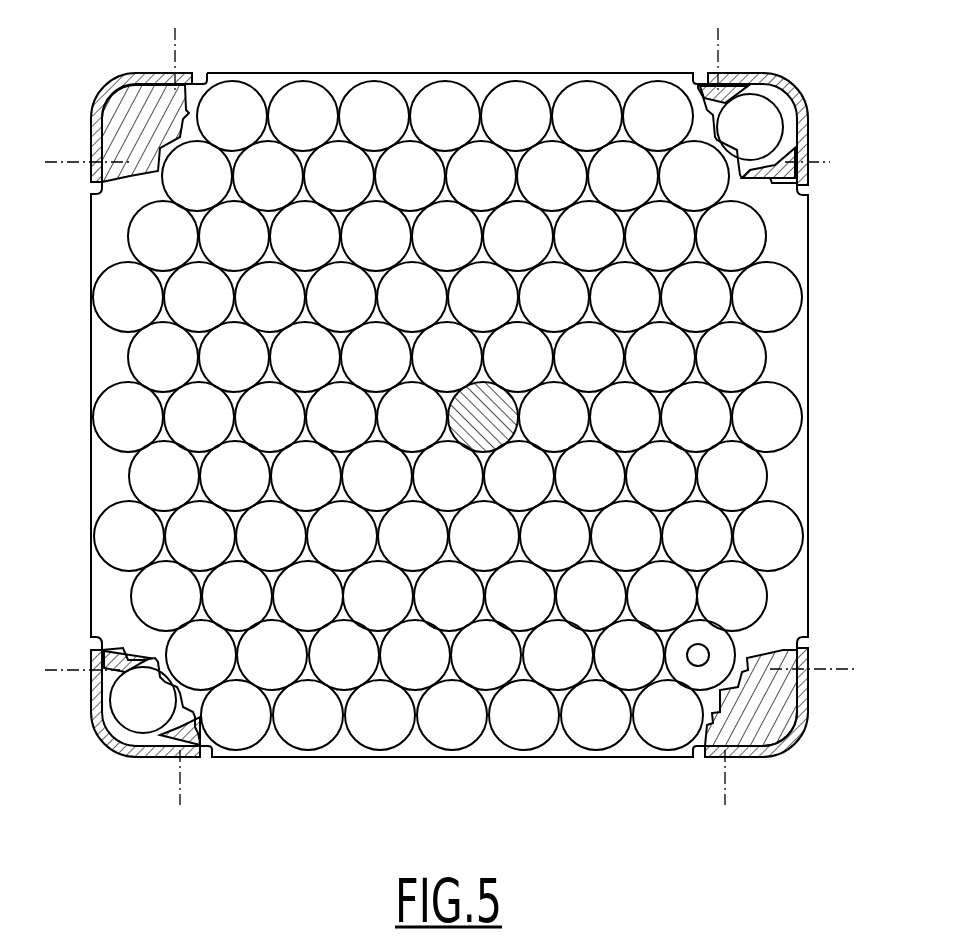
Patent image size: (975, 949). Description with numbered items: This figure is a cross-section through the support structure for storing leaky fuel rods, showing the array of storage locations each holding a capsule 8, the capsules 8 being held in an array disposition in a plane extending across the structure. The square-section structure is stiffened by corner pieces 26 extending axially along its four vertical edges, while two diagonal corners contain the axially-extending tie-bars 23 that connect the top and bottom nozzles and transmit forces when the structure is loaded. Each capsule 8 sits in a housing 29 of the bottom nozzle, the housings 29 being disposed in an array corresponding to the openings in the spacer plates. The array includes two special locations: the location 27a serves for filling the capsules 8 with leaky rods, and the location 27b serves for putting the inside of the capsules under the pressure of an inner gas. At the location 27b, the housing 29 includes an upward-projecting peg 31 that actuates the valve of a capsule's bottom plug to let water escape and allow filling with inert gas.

The capsule 8 is at (487, 418).
The tie-bars 23 is at (757, 127).
The corner pieces 26 is at (101, 93).
The special location 27a is at (197, 132).
The special location 27b is at (798, 642).
The housings 29 is at (590, 238).
The peg 31 is at (697, 656).